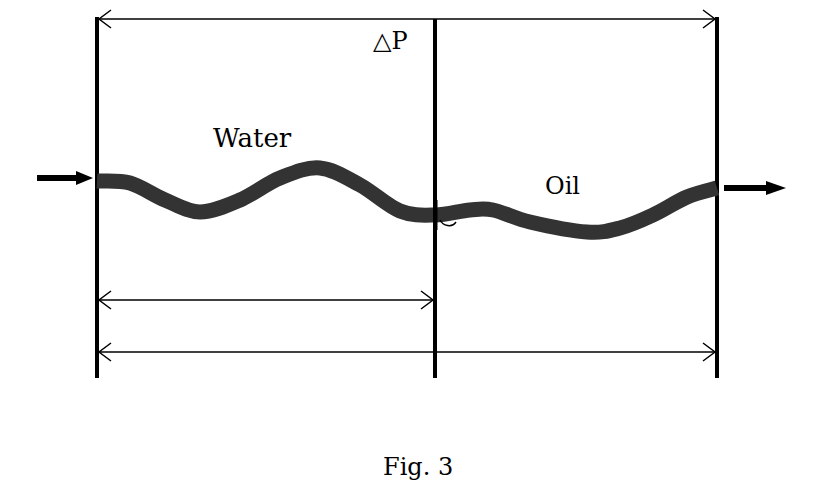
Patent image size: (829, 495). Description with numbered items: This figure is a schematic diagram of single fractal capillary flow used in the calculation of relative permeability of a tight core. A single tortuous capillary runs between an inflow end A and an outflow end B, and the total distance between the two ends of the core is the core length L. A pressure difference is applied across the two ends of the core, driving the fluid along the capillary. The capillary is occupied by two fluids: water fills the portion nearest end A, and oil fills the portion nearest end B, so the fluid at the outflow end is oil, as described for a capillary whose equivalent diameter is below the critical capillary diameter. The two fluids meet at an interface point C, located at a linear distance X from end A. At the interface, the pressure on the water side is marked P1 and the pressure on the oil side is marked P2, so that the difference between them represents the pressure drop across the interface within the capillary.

The inlet end of pipe (water side) A is at (65, 198).
The outlet end of pipe (oil side) B is at (755, 205).
The water-oil interface point C is at (448, 229).
The pressure on water side of interface P1 is at (415, 198).
The pressure on oil side of interface P2 is at (455, 197).
The distance from inlet to interface X is at (266, 282).
The core length L is at (407, 343).